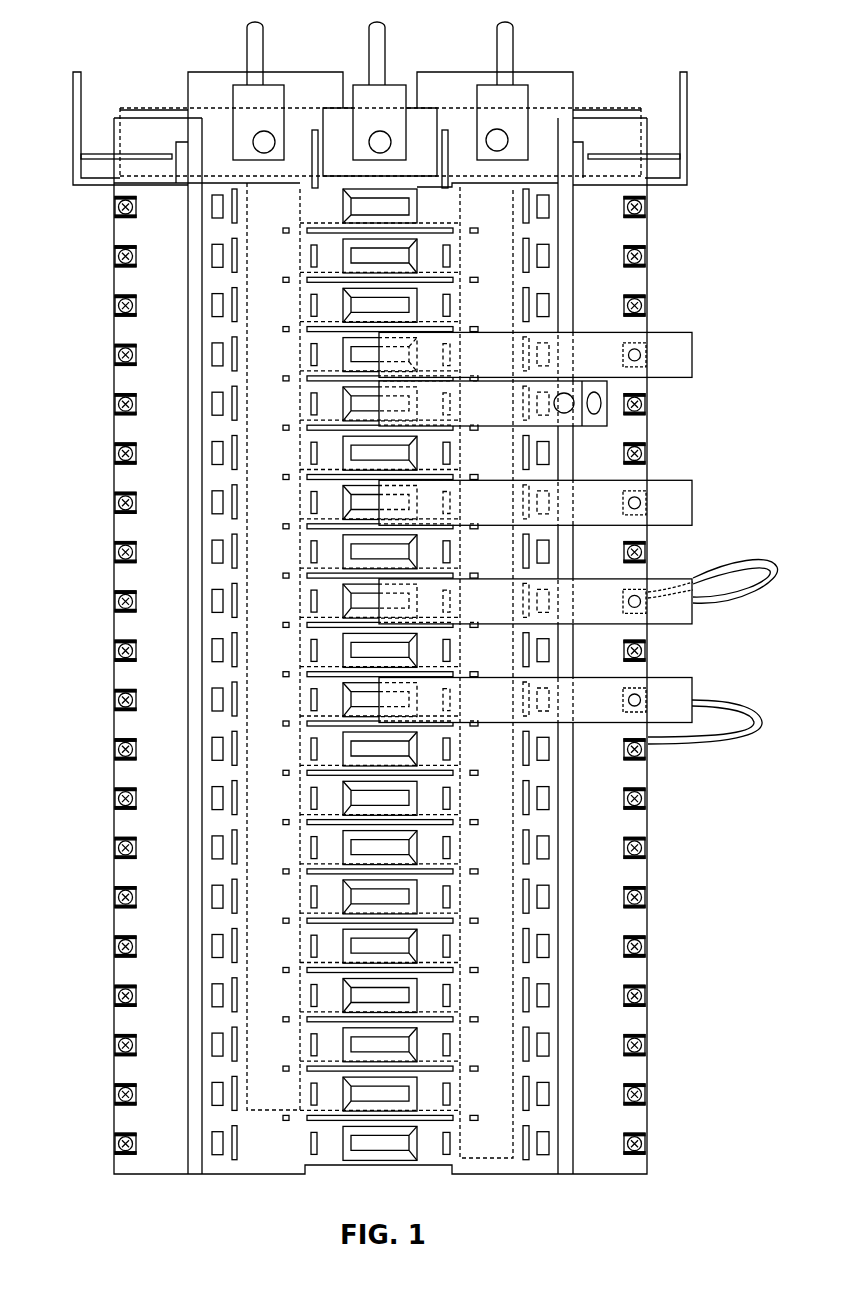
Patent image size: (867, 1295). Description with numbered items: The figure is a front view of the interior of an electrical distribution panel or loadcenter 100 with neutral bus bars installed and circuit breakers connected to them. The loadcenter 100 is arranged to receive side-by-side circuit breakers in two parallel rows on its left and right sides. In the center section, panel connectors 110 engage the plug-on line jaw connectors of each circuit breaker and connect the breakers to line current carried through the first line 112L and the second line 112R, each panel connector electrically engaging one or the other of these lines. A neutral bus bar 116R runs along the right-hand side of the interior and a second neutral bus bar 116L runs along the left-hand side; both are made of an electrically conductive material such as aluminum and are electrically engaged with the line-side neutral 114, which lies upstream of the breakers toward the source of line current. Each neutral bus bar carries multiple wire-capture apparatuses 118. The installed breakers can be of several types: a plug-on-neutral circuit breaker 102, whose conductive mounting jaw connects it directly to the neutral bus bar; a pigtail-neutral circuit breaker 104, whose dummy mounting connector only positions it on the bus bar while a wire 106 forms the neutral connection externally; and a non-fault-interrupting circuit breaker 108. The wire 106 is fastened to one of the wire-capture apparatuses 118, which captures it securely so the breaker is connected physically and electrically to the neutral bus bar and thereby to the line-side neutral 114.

The loadcenter 100 is at (97, 1199).
The plug-on-neutral circuit breaker 102 is at (693, 503).
The pigtail-neutral circuit breaker 104 is at (663, 578).
The wire 106 is at (733, 707).
The non-fault-interrupting circuit breaker 108 is at (607, 421).
The panel connectors 110 is at (350, 993).
The first line 112L is at (247, 62).
The second line 112R is at (497, 62).
The line-side neutral 114 is at (369, 62).
The neutral bus bar 116L is at (118, 110).
The neutral bus bar 116R is at (646, 108).
The wire-capture apparatuses 118 is at (648, 891).